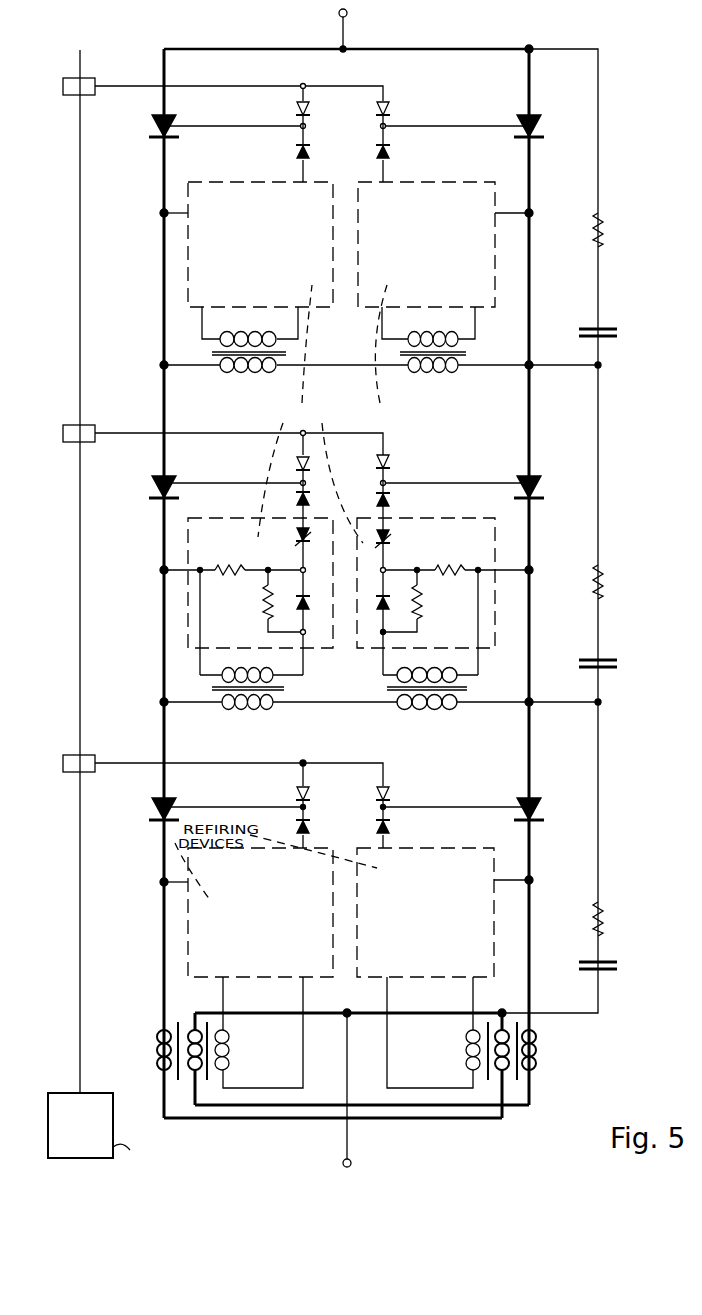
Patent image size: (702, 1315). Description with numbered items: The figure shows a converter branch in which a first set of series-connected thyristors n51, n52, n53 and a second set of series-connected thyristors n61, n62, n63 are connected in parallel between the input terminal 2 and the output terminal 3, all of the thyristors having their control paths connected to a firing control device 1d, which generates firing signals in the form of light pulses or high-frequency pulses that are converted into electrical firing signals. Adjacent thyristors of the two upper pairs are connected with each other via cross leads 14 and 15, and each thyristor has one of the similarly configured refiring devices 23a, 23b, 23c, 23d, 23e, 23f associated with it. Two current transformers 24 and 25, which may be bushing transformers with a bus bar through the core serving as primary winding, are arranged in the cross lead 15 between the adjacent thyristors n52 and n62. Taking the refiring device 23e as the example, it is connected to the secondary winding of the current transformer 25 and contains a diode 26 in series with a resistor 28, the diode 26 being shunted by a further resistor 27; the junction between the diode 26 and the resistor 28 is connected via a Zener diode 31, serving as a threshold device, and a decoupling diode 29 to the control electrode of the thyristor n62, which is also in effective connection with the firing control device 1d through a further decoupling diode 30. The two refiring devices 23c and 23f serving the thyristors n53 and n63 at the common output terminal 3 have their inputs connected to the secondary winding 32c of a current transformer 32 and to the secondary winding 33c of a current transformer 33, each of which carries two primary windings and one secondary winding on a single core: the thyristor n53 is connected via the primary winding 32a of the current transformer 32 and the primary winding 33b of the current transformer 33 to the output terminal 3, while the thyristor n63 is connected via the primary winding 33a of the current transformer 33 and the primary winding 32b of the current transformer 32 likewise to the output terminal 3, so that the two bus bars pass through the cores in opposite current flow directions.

The input terminal 2 is at (351, 29).
The output terminal 3 is at (354, 1092).
The firing control device 1d is at (165, 1137).
The cross lead 14 is at (338, 367).
The cross lead 15 is at (326, 706).
The refiring device 23a is at (246, 277).
The refiring device 23b is at (245, 518).
The refiring device 23c is at (246, 968).
The refiring device 23d is at (445, 277).
The refiring device 23e is at (416, 518).
The refiring device 23f is at (445, 968).
The current transformer 24 is at (290, 690).
The current transformer 25 is at (395, 690).
The diode 26 is at (378, 605).
The resistor 27 is at (421, 601).
The resistor 28 is at (447, 566).
The decoupling diode 29 is at (375, 501).
The decoupling diode 30 is at (392, 461).
The Zener diode 31 is at (395, 539).
The current transformer 32 is at (151, 1073).
The primary winding 32a is at (156, 1038).
The primary winding 32b is at (192, 1078).
The secondary winding 32c is at (231, 1043).
The current transformer 33 is at (574, 1073).
The primary winding 33a is at (539, 1078).
The primary winding 33b is at (508, 1077).
The secondary winding 33c is at (464, 1043).
The thyristor n51 is at (170, 120).
The thyristor n52 is at (170, 481).
The thyristor n53 is at (170, 803).
The thyristor n61 is at (524, 116).
The thyristor n62 is at (524, 476).
The thyristor n63 is at (523, 799).